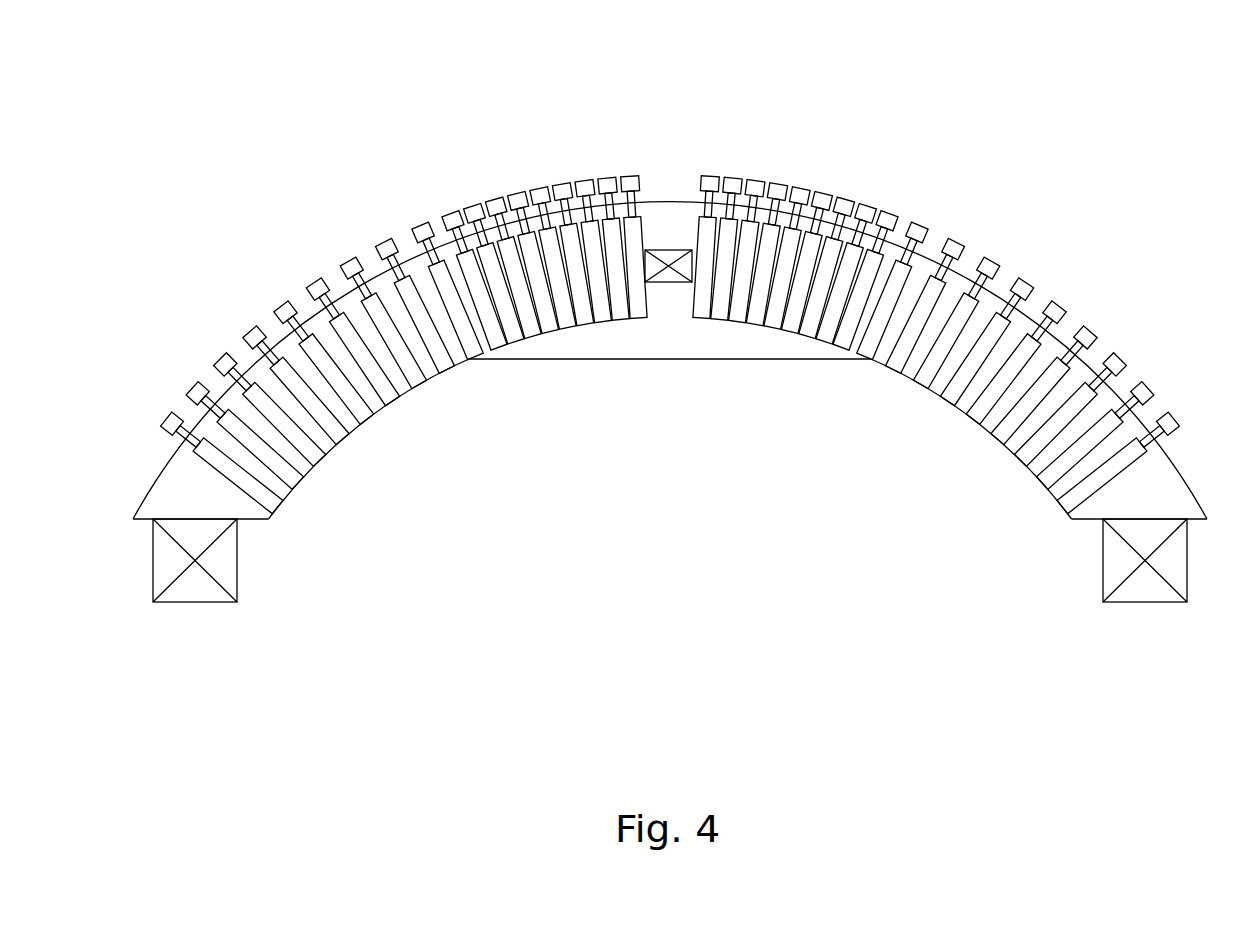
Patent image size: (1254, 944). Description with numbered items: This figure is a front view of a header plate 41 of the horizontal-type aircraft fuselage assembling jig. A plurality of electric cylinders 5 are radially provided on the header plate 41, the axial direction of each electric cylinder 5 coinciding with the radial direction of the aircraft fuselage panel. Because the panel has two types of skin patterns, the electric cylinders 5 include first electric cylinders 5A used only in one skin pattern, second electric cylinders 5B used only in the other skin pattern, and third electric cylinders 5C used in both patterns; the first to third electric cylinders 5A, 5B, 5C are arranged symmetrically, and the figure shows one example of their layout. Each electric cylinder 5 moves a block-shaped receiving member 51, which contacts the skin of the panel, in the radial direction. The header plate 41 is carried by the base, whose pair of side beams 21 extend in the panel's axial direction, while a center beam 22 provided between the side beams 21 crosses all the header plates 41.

The electric cylinder 5 is at (670, 378).
The first electric cylinder 5A is at (499, 347).
The second electric cylinder 5B is at (281, 510).
The third electric cylinder 5C is at (447, 370).
The side beam 21 is at (200, 587).
The center beam 22 is at (675, 250).
The header plate 41 is at (740, 343).
The receiving member 51 is at (1052, 312).